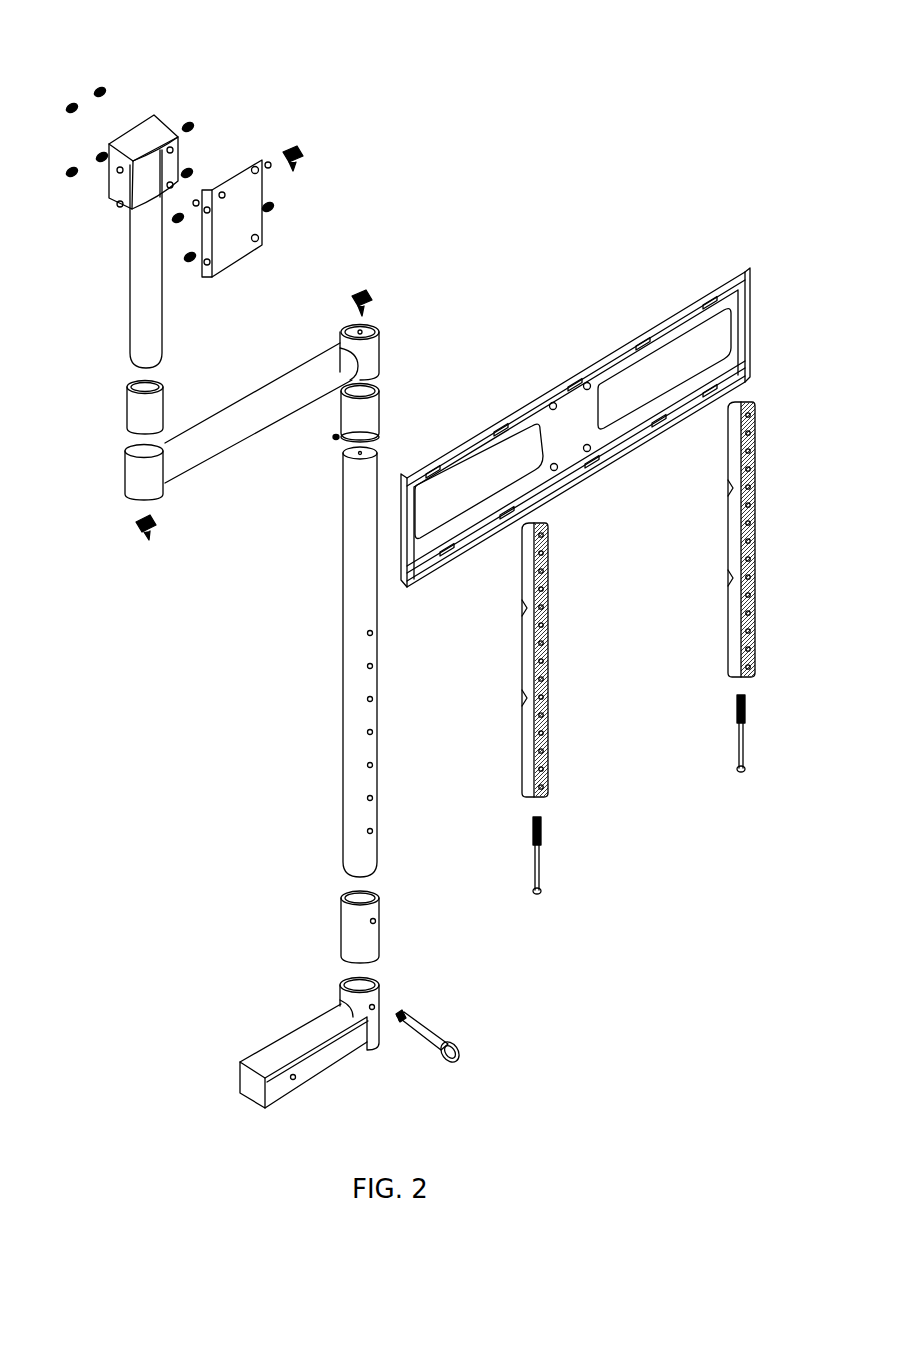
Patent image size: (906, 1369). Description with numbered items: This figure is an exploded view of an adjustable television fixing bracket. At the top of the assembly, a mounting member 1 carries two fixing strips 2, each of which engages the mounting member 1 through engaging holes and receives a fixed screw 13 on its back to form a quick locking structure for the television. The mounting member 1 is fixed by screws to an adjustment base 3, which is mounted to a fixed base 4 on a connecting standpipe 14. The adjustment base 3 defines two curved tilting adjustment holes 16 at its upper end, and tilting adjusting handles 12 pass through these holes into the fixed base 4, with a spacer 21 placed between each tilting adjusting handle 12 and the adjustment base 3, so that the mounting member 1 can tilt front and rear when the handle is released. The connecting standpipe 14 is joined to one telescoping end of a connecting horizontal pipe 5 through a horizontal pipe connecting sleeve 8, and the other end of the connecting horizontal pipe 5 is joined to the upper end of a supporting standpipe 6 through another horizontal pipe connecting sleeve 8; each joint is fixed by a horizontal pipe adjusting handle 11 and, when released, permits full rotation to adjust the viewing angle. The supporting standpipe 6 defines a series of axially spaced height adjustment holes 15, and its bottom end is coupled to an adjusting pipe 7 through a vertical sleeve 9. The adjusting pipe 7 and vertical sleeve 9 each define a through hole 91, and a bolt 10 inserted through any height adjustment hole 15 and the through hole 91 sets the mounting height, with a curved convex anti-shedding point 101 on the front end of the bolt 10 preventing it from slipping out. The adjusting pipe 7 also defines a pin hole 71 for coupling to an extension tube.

The mounting member 1 is at (570, 455).
The fixing strip 2 is at (546, 660).
The adjustment base 3 is at (230, 240).
The fixed base 4 is at (160, 130).
The connecting horizontal pipe 5 is at (200, 440).
The supporting standpipe 6 is at (355, 737).
The adjusting pipe 7 is at (290, 1050).
The horizontal pipe connecting sleeve 8 is at (383, 412).
The vertical sleeve 9 is at (345, 912).
The bolt 10 is at (425, 1040).
The horizontal pipe adjusting handle 11 is at (143, 534).
The tilting adjusting handle 12 is at (292, 150).
The fixed screw 13 is at (540, 858).
The connecting standpipe 14 is at (148, 303).
The height adjustment hole 15 is at (373, 766).
The tilting adjustment hole 16 is at (198, 198).
The spacer 21 is at (268, 163).
The pin hole 71 is at (293, 1080).
The through hole 91 is at (377, 1005).
The curved convex anti-shedding point 101 is at (404, 1025).